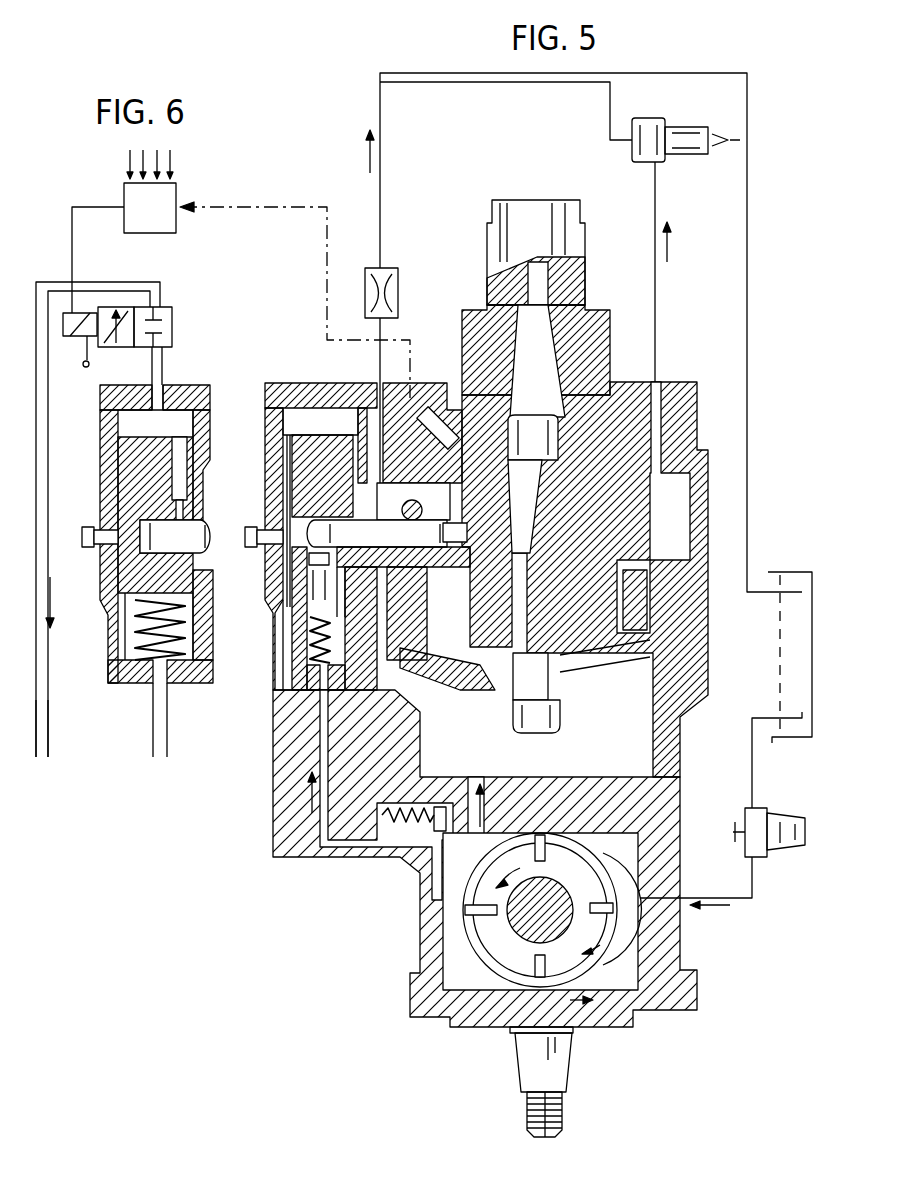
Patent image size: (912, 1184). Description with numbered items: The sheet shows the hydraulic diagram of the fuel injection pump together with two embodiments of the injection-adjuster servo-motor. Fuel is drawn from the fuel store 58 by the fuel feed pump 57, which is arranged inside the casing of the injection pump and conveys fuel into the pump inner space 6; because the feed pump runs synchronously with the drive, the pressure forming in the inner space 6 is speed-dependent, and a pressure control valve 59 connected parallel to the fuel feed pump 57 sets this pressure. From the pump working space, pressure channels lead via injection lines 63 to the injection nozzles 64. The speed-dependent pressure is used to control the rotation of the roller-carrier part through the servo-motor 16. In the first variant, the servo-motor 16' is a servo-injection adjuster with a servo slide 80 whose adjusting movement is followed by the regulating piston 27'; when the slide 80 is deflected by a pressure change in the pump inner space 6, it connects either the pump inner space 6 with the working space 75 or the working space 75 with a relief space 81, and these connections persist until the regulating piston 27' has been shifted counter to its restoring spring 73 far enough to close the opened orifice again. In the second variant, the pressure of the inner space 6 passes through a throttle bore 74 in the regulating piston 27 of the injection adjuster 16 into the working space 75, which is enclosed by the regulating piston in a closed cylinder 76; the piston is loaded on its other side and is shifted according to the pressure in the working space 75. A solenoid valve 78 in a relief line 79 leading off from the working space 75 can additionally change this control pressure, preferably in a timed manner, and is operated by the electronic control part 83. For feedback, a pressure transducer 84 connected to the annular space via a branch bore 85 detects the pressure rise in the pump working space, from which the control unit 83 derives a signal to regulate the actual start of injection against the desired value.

In FIG. 5, the pump inner space 6 is at (625, 738).
In FIG. 6, the servo-motor 16 is at (135, 555).
In FIG. 5, the servo-motor 16' is at (363, 533).
In FIG. 6, the regulating piston 27 is at (126, 507).
In FIG. 5, the regulating piston 27' is at (293, 470).
In FIG. 5, the fuel feed pump 57 is at (493, 932).
In FIG. 5, the fuel store 58 is at (780, 575).
In FIG. 5, the pressure control valve 59 is at (413, 836).
In FIG. 5, the injection lines 63 is at (662, 191).
In FIG. 5, the injection nozzles 64 is at (683, 137).
In FIG. 6, the restoring spring 73 is at (125, 655).
In FIG. 5, the restoring spring 73 is at (300, 663).
In FIG. 6, the throttle bore 74 is at (116, 478).
In FIG. 6, the working space 75 is at (120, 420).
In FIG. 5, the working space 75 is at (292, 422).
In FIG. 6, the closed cylinder 76 is at (100, 497).
In FIG. 6, the solenoid valve 78 is at (167, 307).
In FIG. 6, the relief line 79 is at (50, 722).
In FIG. 5, the servo slide 80 is at (283, 636).
In FIG. 5, the relief space 81 is at (277, 712).
In FIG. 6, the electronic control part 83 is at (124, 193).
In FIG. 5, the pressure transducer 84 is at (425, 390).
In FIG. 5, the branch bore 85 is at (508, 470).